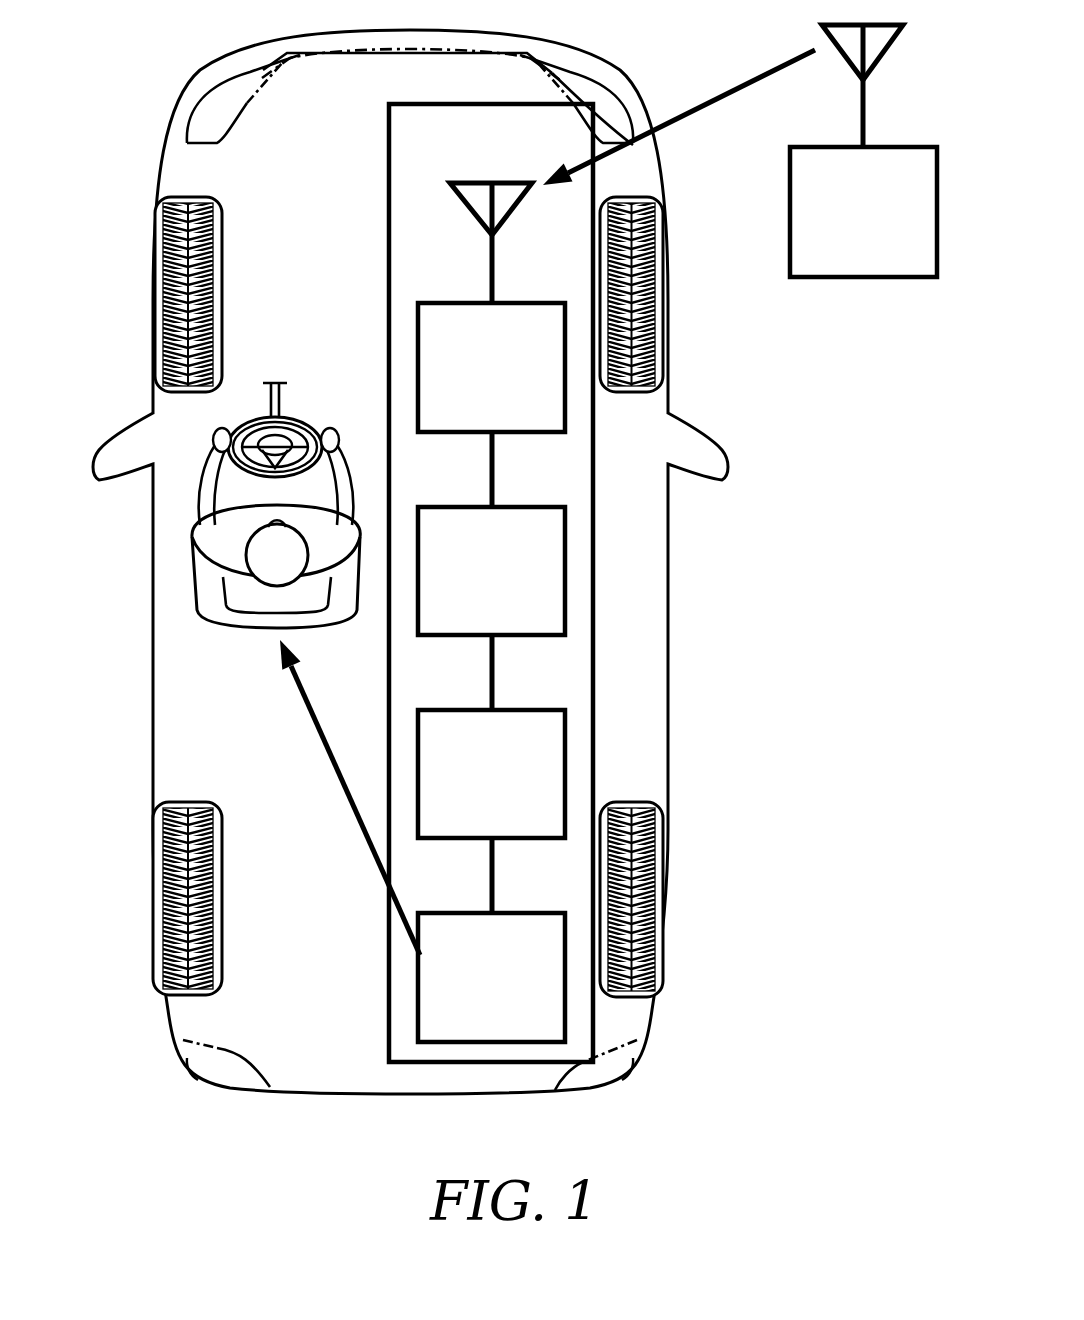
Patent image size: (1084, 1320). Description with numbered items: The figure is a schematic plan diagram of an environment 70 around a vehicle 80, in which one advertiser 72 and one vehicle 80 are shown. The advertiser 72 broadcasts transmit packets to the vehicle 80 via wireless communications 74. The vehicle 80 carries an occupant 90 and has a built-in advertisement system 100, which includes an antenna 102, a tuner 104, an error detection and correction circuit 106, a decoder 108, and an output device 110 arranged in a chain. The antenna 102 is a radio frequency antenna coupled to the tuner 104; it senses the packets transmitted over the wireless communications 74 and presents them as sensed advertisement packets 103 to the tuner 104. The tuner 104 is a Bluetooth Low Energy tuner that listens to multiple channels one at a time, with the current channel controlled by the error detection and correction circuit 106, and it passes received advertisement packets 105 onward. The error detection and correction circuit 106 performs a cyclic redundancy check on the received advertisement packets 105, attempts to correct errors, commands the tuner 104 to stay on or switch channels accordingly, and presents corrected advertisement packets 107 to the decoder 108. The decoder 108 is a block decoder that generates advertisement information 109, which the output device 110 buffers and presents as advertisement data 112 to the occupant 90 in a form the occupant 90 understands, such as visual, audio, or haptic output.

The environment 70 is at (148, 75).
The advertiser 72 is at (900, 147).
The wireless communications 74 is at (706, 100).
The vehicle 80 is at (153, 337).
The occupant 90 is at (215, 553).
The advertisement system 100 is at (389, 222).
The antenna 102 is at (470, 182).
The sensed advertisement packets 103 is at (493, 270).
The tuner 104 is at (457, 303).
The received advertisement packets 105 is at (493, 485).
The error detection and correction circuit 106 is at (457, 507).
The corrected advertisement packets 107 is at (493, 690).
The decoder 108 is at (457, 710).
The advertisement information 109 is at (493, 890).
The output device 110 is at (457, 913).
The advertisement data 112 is at (335, 773).